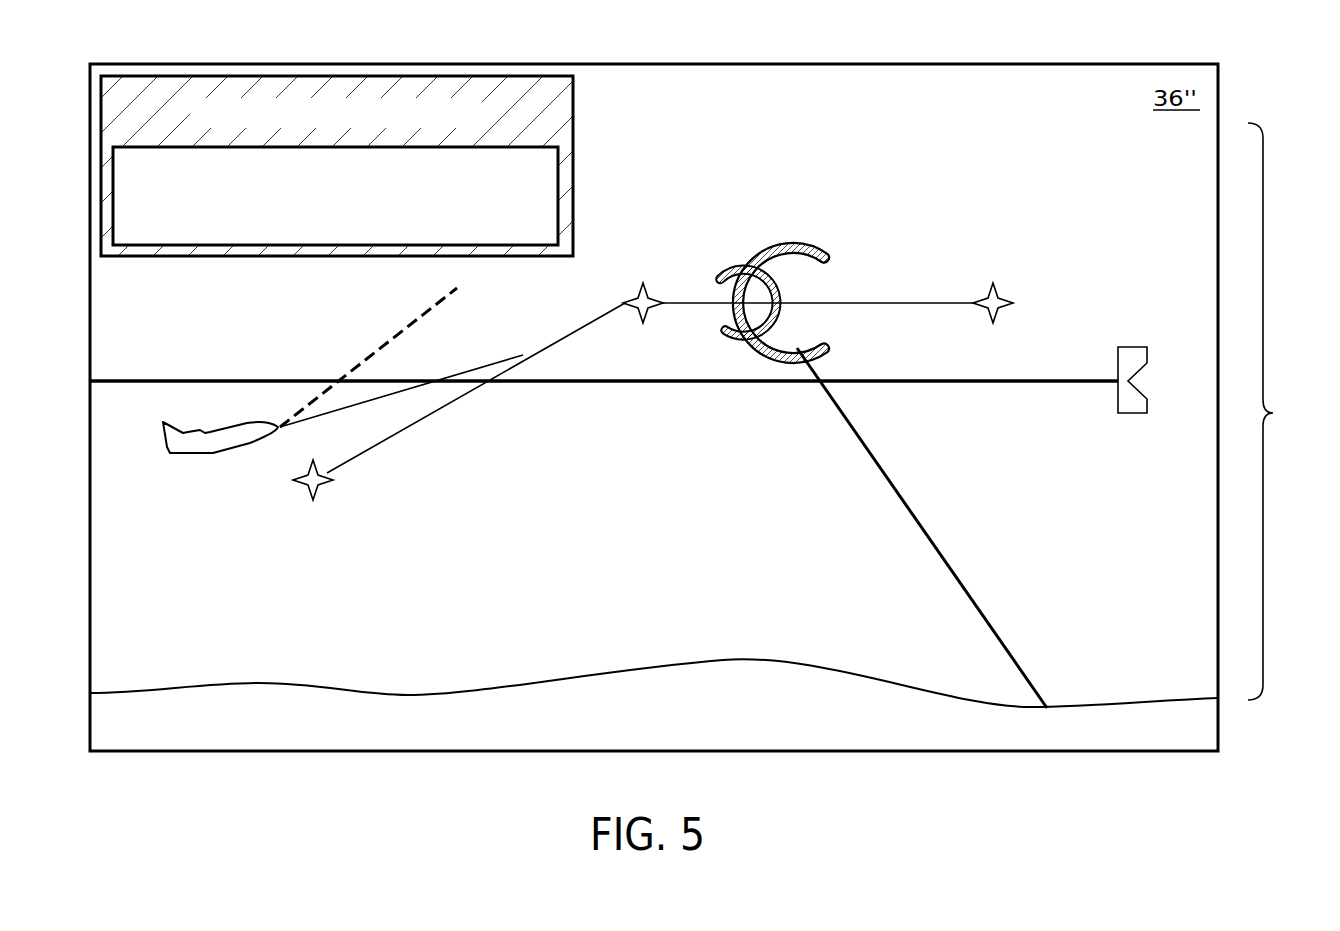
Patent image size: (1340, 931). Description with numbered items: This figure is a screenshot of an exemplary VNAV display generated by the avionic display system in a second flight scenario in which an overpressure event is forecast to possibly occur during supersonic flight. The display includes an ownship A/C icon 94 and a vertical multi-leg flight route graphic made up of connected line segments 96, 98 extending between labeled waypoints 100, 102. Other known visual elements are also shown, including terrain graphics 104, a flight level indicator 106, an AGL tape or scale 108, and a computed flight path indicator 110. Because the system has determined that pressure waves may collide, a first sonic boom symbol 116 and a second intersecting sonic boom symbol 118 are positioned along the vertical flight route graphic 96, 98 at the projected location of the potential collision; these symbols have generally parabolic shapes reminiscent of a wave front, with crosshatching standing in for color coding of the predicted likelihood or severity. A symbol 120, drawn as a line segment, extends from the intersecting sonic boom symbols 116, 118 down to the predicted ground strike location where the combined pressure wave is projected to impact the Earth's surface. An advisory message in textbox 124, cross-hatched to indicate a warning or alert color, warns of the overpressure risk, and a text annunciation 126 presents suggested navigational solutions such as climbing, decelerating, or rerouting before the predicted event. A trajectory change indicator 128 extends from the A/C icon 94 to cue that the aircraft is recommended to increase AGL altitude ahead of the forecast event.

The ownship A/C icon 94 is at (213, 455).
The line segment of vertical multi-leg flight route graphic 96 is at (432, 417).
The line segment of vertical multi-leg flight route graphic 98 is at (905, 303).
The labeled waypoint 100 is at (650, 315).
The labeled waypoint 102 is at (997, 316).
The terrain graphics 104 is at (215, 683).
The flight level indicator 106 is at (1018, 383).
The AGL tape or scale 108 is at (1241, 411).
The computed flight path indicator 110 is at (513, 352).
The first sonic boom symbol 116 is at (805, 256).
The second intersecting sonic boom symbol 118 is at (732, 278).
The ground strike location symbol 120 is at (945, 545).
The textbox 124 is at (318, 76).
The text annunciation 126 is at (551, 240).
The trajectory change indicator 128 is at (370, 350).